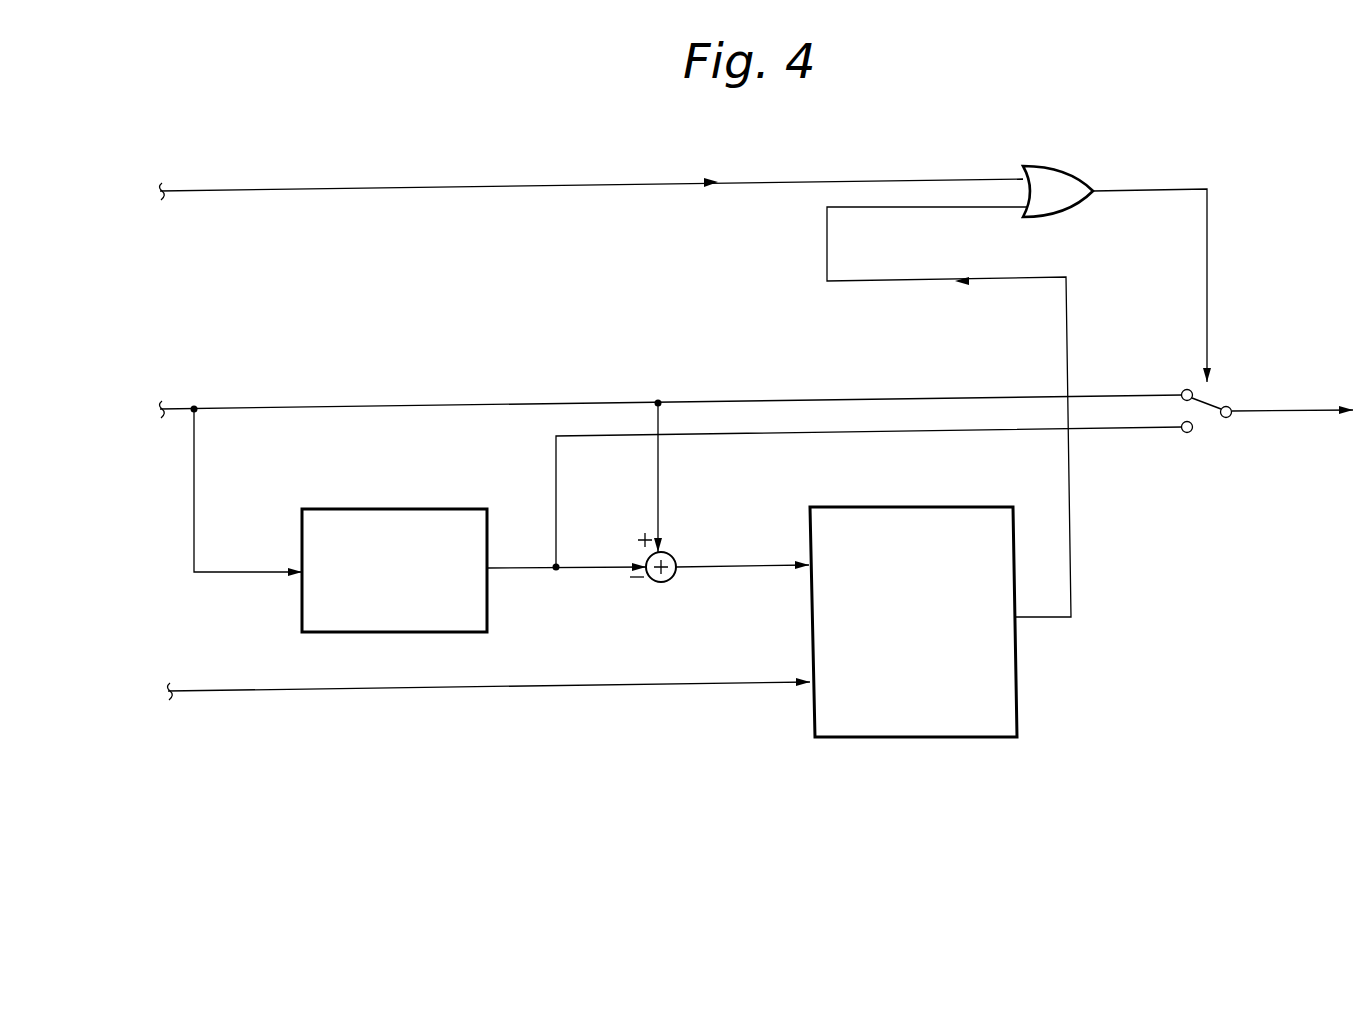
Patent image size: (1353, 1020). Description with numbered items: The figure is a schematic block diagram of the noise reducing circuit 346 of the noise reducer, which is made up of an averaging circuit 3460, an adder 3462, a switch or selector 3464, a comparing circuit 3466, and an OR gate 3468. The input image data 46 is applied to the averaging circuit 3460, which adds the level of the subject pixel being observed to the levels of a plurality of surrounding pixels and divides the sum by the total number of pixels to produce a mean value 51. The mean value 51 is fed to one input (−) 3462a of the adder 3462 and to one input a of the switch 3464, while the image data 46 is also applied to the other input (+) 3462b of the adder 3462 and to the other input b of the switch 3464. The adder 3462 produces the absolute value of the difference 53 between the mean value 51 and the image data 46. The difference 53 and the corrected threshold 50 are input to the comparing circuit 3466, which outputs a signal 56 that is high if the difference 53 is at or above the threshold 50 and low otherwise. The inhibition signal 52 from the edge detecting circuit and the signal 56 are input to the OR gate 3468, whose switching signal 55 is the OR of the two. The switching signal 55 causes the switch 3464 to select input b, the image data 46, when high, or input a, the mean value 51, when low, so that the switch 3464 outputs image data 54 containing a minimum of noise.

The image data 46 is at (382, 404).
The corrected threshold 50 is at (530, 688).
The mean value 51 is at (528, 572).
The inhibition signal 52 is at (527, 184).
The difference 53 is at (747, 565).
The image data 54 is at (1287, 410).
The switching signal 55 is at (1207, 243).
The signal 56 is at (1068, 523).
The noise reducing circuit 346 is at (1115, 662).
The averaging circuit 3460 is at (383, 507).
The adder 3462 is at (663, 583).
The input (−) 3462a is at (648, 555).
The input (+) 3462b is at (665, 550).
The switch 3464 is at (1220, 445).
The comparing circuit 3466 is at (915, 740).
The OR gate 3468 is at (1050, 163).
The input a is at (1187, 435).
The input b is at (1184, 390).